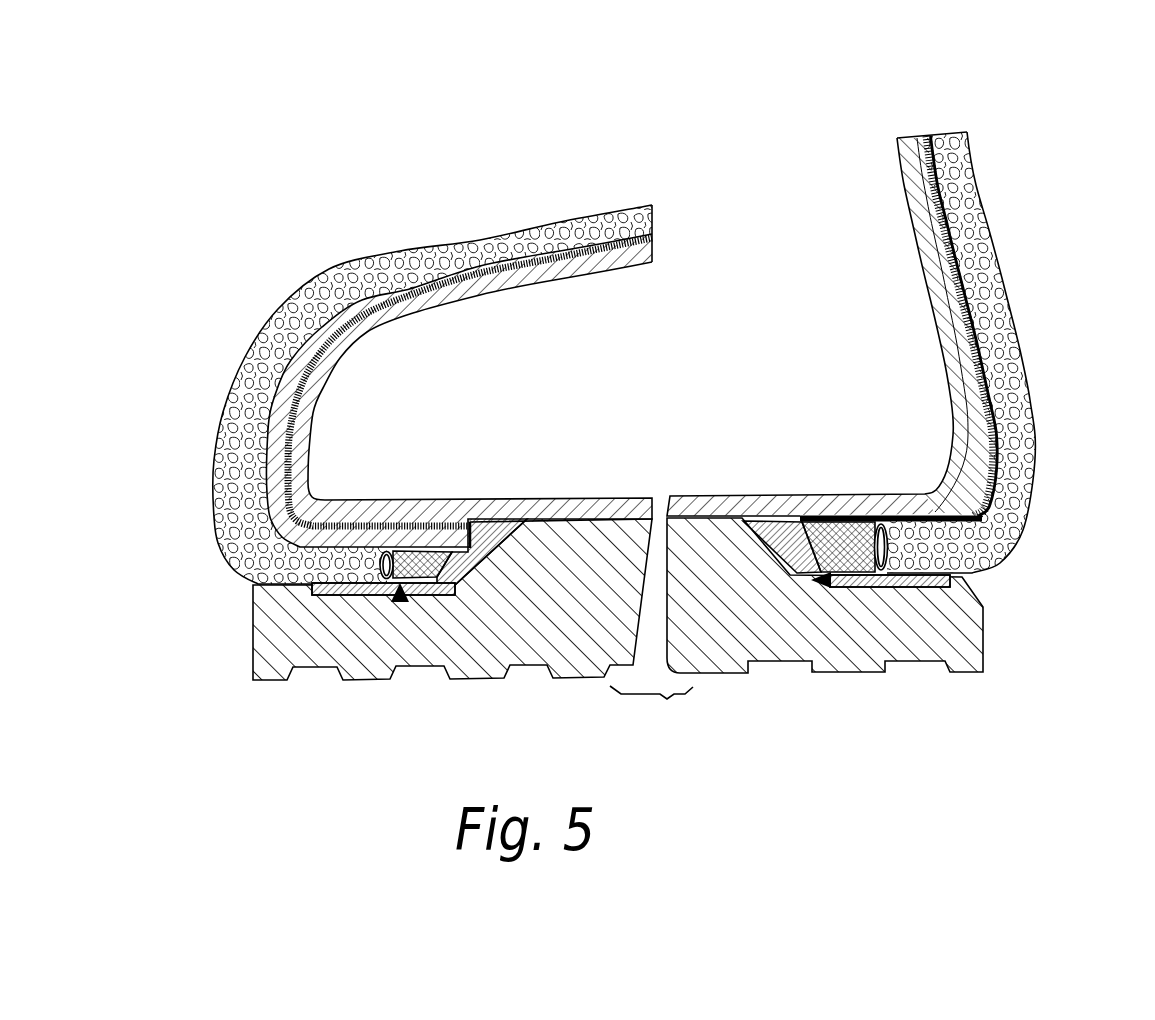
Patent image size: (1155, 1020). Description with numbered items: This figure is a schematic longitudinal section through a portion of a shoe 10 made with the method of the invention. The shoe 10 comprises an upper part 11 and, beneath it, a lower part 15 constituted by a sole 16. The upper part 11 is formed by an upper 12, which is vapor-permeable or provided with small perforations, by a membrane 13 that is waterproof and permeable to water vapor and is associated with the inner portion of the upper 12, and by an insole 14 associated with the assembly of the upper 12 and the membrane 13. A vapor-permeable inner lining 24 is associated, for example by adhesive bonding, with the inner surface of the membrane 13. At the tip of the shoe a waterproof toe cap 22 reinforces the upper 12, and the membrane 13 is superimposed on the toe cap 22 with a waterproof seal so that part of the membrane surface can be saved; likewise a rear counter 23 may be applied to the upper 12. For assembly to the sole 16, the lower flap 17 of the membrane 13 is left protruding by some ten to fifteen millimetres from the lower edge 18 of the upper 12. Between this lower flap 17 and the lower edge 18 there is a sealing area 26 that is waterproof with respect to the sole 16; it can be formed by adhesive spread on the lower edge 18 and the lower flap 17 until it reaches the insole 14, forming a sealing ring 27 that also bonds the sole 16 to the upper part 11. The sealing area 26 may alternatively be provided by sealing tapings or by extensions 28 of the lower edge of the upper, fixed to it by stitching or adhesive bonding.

The shoe 10 is at (1025, 168).
The upper part 11 is at (1024, 307).
The upper 12 is at (233, 458).
The membrane 13 is at (520, 267).
The insole 14 is at (835, 493).
The lower part 15 is at (1009, 637).
The sole 16 is at (943, 630).
The lower flap of the membrane 17 is at (805, 528).
The lower edge of the upper 18 is at (887, 587).
The toe cap 22 is at (277, 400).
The rear counter 23 is at (977, 423).
The inner lining 24 is at (913, 233).
The sealing area 26 is at (399, 603).
The sealing ring 27 is at (487, 540).
The extensions of the lower edge of the upper 28 is at (435, 570).